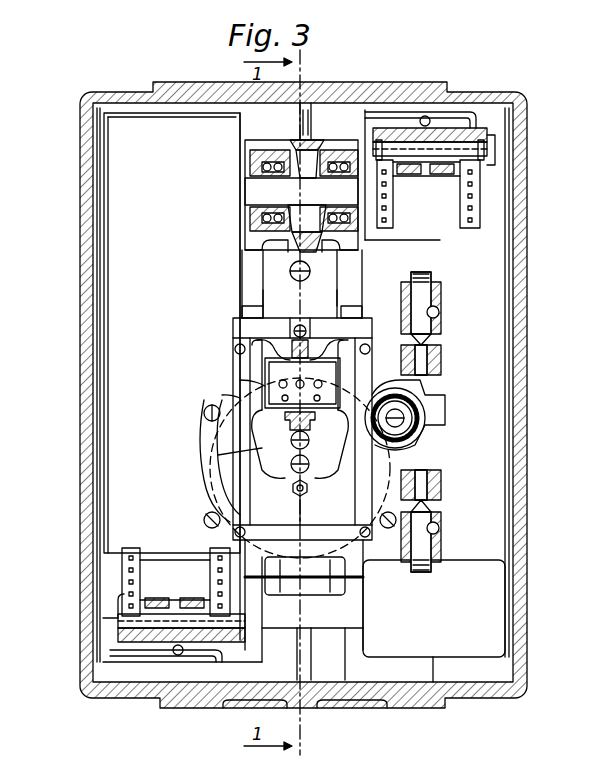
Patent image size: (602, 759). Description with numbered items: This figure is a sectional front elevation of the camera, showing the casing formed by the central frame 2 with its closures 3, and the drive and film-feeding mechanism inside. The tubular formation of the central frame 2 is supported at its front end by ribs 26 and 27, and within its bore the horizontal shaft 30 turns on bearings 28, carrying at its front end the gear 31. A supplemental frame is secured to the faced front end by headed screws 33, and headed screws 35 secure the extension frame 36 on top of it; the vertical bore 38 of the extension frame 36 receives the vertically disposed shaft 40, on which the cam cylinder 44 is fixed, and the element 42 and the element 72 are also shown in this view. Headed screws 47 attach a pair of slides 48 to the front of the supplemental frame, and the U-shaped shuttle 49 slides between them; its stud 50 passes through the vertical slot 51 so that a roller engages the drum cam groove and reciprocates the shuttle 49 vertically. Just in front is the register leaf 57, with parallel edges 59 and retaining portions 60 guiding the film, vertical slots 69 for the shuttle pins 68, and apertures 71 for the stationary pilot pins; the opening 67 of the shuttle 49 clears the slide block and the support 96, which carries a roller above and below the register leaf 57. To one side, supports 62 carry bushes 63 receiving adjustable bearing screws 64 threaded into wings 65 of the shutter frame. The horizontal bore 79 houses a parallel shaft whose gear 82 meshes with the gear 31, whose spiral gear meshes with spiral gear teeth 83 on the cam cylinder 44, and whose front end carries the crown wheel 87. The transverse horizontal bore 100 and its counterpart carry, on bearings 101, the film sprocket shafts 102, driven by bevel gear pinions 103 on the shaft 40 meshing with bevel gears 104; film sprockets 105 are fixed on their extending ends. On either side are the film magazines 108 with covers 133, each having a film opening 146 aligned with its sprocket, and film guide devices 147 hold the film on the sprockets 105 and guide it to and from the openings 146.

The central frame 2 is at (372, 686).
The closure 3 is at (88, 285).
The rib 26 is at (270, 120).
The rib 27 is at (332, 652).
The bearings 28 is at (312, 376).
The horizontal shaft 30 is at (300, 468).
The gear 31 is at (30, 632).
The headed screws 33 is at (204, 412).
The headed screws 35 is at (240, 316).
The extension frame 36 is at (278, 282).
The vertical bore 38 is at (268, 260).
The vertically disposed shaft 40 is at (384, 270).
The screw 42 is at (292, 476).
The cam cylinder 44 is at (322, 490).
The headed screws 47 is at (212, 528).
The slides 48 is at (235, 362).
The shuttle 49 is at (340, 538).
The stud 50 is at (305, 510).
The vertical slot 51 is at (319, 444).
The register leaf 57 is at (289, 317).
The parallel edges 59 is at (246, 334).
The retaining portions 60 is at (300, 339).
The supports 62 is at (442, 358).
The bush 63 is at (434, 340).
The adjustable bearing screws 64 is at (426, 282).
The wings 65 is at (442, 306).
The opening 67 is at (260, 460).
The shuttle pins 68 is at (240, 394).
The vertical slots 69 is at (240, 380).
The apertures 71 is at (216, 442).
The spring arm 72 is at (220, 432).
The horizontal bore 79 is at (428, 392).
The gear 82 is at (457, 452).
The spiral gear teeth 83 is at (288, 430).
The crown wheel 87 is at (412, 418).
The support 96 is at (304, 325).
The transverse horizontal bore 100 is at (248, 223).
The bearings 101 is at (252, 208).
The film sprocket shaft 102 is at (256, 184).
The bevel gear pinion 103 is at (242, 236).
The bevel gear 104 is at (308, 150).
The film sprocket 105 is at (462, 214).
The film magazines 108 is at (112, 216).
The covers 133 is at (100, 244).
The film opening 146 is at (480, 166).
The film guide device 147 is at (460, 138).